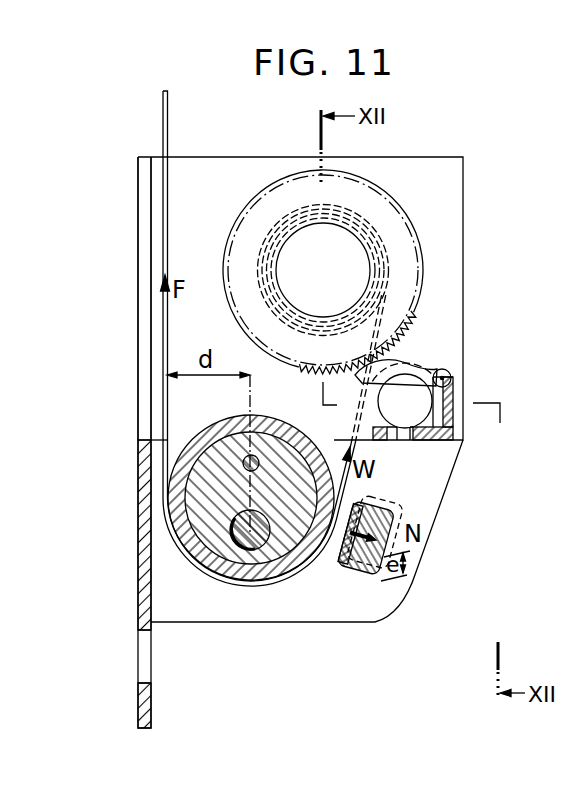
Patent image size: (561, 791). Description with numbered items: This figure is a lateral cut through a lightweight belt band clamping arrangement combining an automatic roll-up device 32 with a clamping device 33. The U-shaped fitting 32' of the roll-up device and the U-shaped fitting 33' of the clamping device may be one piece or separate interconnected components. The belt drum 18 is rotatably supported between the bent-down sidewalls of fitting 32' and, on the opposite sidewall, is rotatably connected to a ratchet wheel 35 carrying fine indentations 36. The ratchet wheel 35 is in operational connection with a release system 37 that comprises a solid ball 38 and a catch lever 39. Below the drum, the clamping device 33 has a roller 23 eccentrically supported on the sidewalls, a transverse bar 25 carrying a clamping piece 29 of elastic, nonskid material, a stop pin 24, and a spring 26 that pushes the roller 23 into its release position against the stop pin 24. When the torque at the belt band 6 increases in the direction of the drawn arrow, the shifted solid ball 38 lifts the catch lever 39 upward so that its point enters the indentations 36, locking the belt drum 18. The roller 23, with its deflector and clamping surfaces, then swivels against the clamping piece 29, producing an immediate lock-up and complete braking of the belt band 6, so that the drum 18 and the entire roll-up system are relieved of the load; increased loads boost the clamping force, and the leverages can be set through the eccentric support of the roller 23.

The belt band 6 is at (168, 107).
The belt drum 18 is at (346, 232).
The roller 23 is at (207, 530).
The stop pin 24 is at (224, 441).
The transverse bar 25 is at (383, 510).
The spring 26 is at (240, 497).
The clamping piece 29 is at (341, 556).
The automatic roll-up device 32 is at (338, 298).
The fitting of automatic roll-up device 32' is at (119, 298).
The clamping device 33 is at (351, 531).
The fitting of clamping device 33' is at (119, 584).
The ratchet wheel 35 is at (407, 280).
The fine indentations 36 is at (414, 317).
The release system 37 is at (469, 391).
The solid ball 38 is at (387, 400).
The catch lever 39 is at (418, 362).